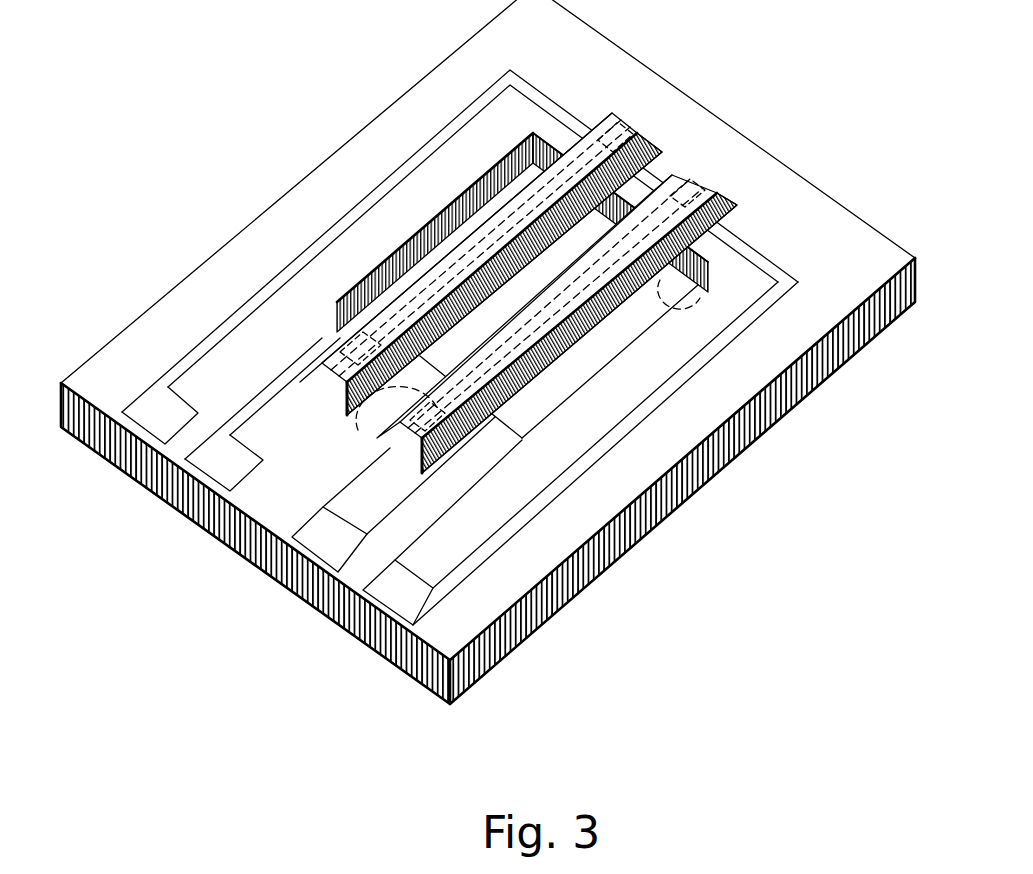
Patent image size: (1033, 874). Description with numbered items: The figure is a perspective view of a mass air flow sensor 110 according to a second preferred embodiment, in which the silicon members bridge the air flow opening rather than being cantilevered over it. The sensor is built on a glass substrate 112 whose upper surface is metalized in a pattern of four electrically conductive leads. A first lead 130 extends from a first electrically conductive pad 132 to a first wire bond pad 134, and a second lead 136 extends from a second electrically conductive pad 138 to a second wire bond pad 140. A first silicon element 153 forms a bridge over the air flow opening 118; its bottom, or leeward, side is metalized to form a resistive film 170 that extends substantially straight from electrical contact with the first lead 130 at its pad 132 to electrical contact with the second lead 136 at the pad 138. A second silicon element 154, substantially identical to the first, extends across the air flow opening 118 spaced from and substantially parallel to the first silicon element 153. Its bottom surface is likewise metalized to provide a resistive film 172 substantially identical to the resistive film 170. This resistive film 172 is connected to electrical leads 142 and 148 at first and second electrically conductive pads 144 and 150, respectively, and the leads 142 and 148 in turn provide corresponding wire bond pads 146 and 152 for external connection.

The mass air flow sensor 110 is at (668, 56).
The glass substrate 112 is at (693, 495).
The air flow opening 118 is at (535, 304).
The first lead 130 is at (359, 203).
The first electrically conductive pad 132 is at (613, 113).
The first wire bond pad 134 is at (178, 405).
The second lead 136 is at (297, 361).
The second electrically conductive pad 138 is at (347, 325).
The second wire bond pad 140 is at (241, 472).
The electrical lead 142 is at (445, 477).
The first electrically conductive pad 144 is at (389, 423).
The wire bond pad 146 is at (320, 519).
The electrical lead 148 is at (712, 348).
The second electrically conductive pad 150 is at (671, 177).
The wire bond pad 152 is at (403, 578).
The first silicon element 153 is at (657, 146).
The second silicon element 154 is at (567, 352).
The resistive film 170 is at (410, 244).
The resistive film 172 is at (690, 296).